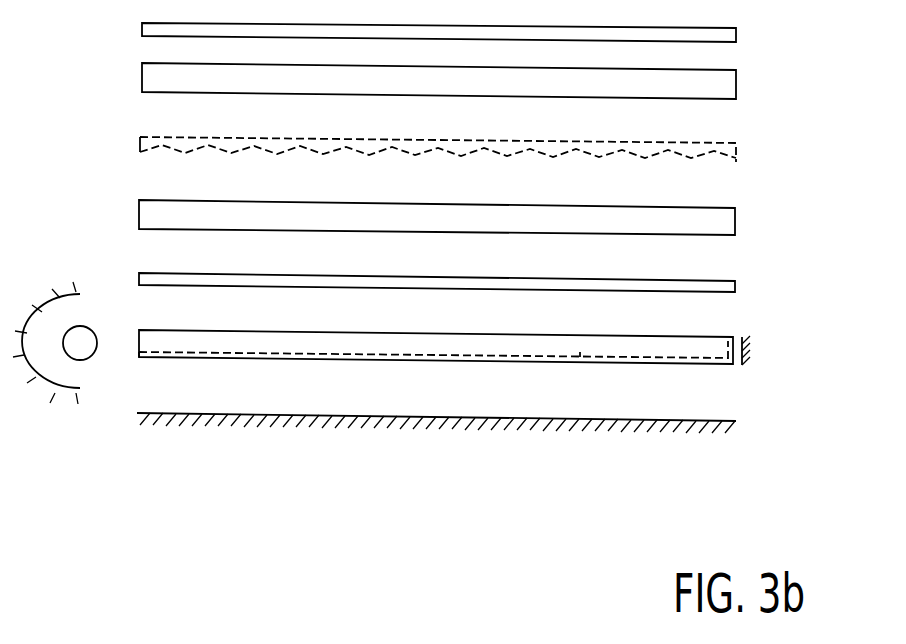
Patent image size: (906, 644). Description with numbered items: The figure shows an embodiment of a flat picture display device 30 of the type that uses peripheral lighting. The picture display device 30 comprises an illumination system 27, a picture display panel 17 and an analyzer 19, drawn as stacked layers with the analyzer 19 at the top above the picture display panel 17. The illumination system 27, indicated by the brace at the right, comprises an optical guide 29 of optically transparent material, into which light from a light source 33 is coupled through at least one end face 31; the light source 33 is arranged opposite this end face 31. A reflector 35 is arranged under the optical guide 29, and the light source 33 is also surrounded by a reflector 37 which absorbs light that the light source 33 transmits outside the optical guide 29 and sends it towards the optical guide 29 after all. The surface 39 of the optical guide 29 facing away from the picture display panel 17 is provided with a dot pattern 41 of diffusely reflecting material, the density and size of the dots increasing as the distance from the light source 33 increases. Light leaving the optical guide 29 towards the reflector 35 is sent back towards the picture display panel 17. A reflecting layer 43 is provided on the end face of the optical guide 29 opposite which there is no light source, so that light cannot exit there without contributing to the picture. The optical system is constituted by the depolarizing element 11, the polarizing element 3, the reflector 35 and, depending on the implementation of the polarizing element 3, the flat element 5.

The analyzer 19 is at (723, 35).
The picture display panel 17 is at (723, 81).
The flat element 5 is at (140, 146).
The polarizing element 3 is at (150, 211).
The depolarizing element 11 is at (152, 277).
The optical guide 29 is at (680, 350).
The surface of the optical guide 39 is at (640, 364).
The dot pattern 41 is at (580, 357).
The reflecting layer 43 is at (742, 366).
The reflector 35 is at (212, 413).
The reflector 37 is at (43, 303).
The light source 33 is at (73, 348).
The end face 31 is at (138, 340).
The picture display device 30 is at (165, 511).
The illumination system 27 is at (763, 147).